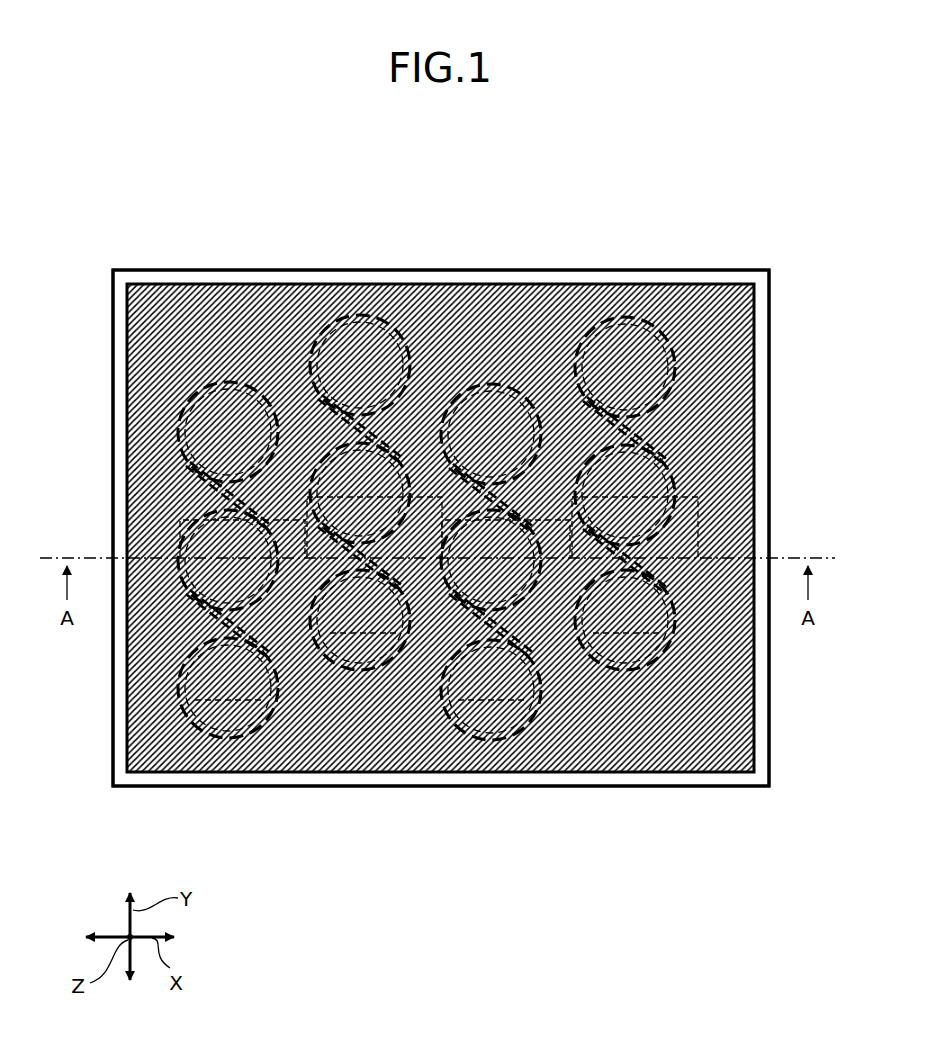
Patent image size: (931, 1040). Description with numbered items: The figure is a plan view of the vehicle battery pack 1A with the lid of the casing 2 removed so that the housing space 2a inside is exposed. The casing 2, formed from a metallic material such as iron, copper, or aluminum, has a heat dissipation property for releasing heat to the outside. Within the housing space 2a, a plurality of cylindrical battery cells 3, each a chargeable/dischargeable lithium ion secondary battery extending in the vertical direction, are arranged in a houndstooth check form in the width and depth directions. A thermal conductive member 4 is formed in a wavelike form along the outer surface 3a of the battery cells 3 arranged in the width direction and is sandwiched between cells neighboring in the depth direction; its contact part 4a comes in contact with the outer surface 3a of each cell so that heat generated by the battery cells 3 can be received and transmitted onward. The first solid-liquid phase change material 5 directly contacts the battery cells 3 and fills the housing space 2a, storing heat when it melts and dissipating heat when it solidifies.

The vehicle battery pack 1A is at (568, 166).
The casing 2 is at (727, 264).
The housing space 2a is at (756, 390).
The battery cells 3 is at (236, 415).
The outer surface 3a is at (266, 392).
The thermal conductive member 4 is at (228, 735).
The contact part 4a is at (245, 705).
The first solid-liquid phase change material 5 is at (765, 410).